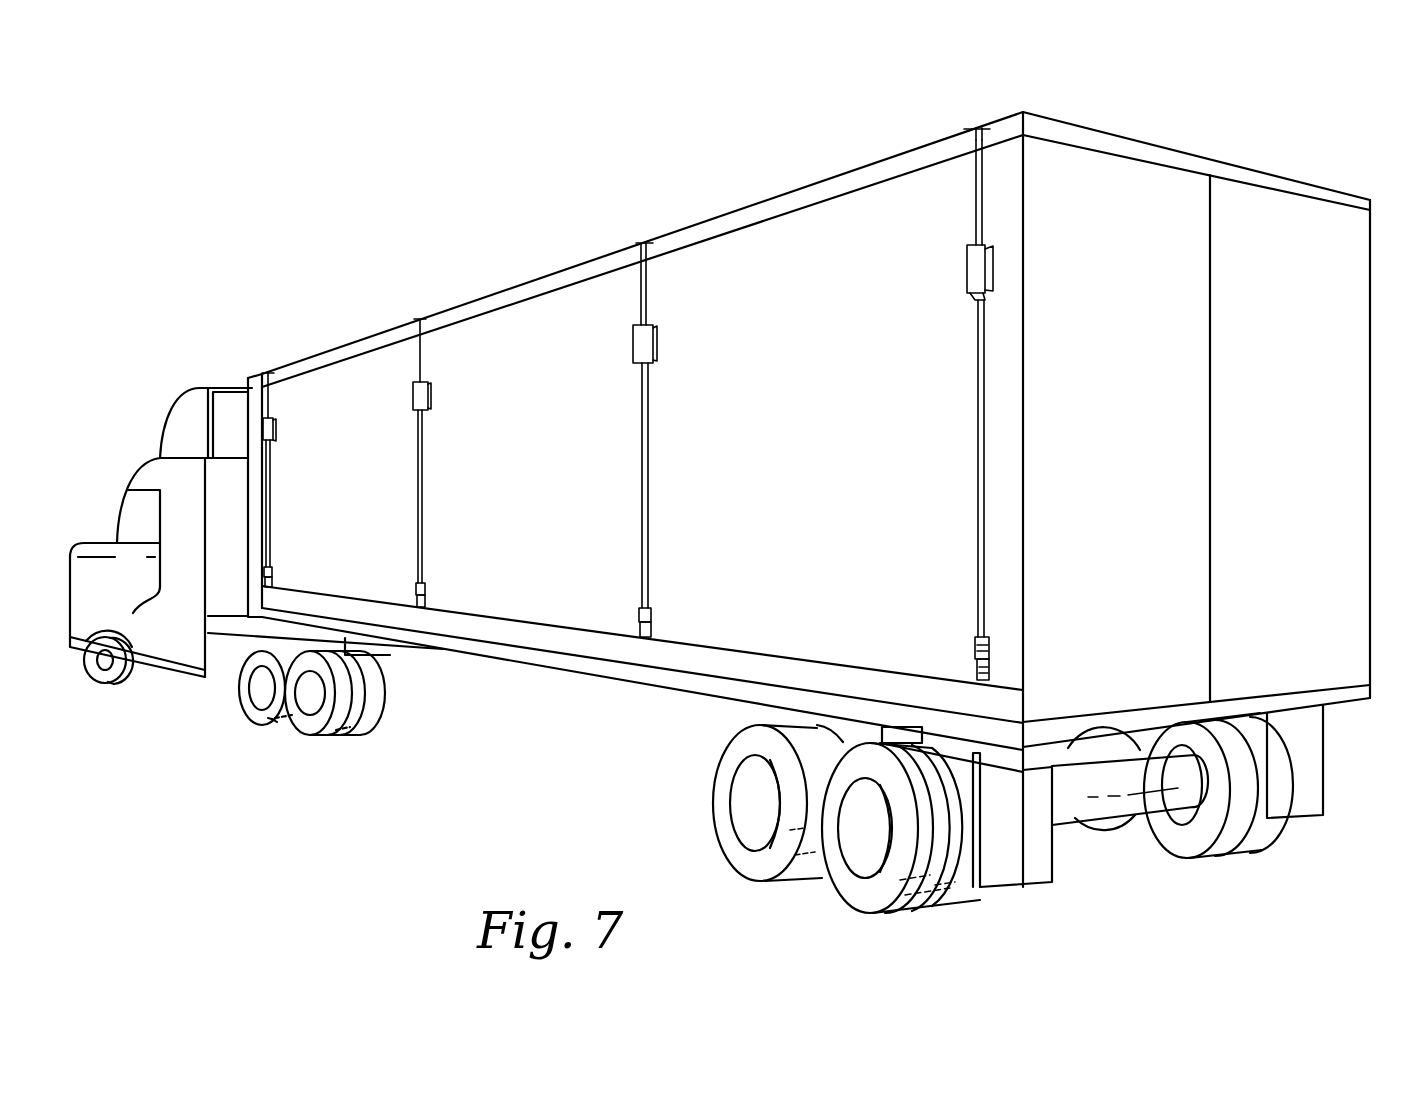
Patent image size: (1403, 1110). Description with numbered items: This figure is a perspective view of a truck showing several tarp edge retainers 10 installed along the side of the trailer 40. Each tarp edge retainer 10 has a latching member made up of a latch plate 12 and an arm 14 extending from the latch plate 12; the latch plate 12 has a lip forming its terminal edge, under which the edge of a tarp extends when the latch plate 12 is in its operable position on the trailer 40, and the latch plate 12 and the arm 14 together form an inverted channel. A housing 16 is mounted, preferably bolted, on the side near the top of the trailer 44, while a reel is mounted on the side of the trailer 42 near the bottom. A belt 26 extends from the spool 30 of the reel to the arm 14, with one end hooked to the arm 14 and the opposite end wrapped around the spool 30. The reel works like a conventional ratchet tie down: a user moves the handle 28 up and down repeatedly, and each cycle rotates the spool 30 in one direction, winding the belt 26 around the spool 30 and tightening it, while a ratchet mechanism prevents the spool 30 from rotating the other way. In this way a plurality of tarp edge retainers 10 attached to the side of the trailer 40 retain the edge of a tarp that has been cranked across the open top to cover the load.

The tarp edge retainer 10 is at (934, 315).
The latch plate 12 is at (963, 131).
The arm 14 is at (977, 194).
The housing 16 is at (967, 266).
The belt 26 is at (982, 457).
The handle 28 is at (1000, 633).
The spool 30 is at (972, 652).
The trailer 40 is at (556, 257).
The trailer 42 is at (711, 667).
The trailer 44 is at (786, 205).